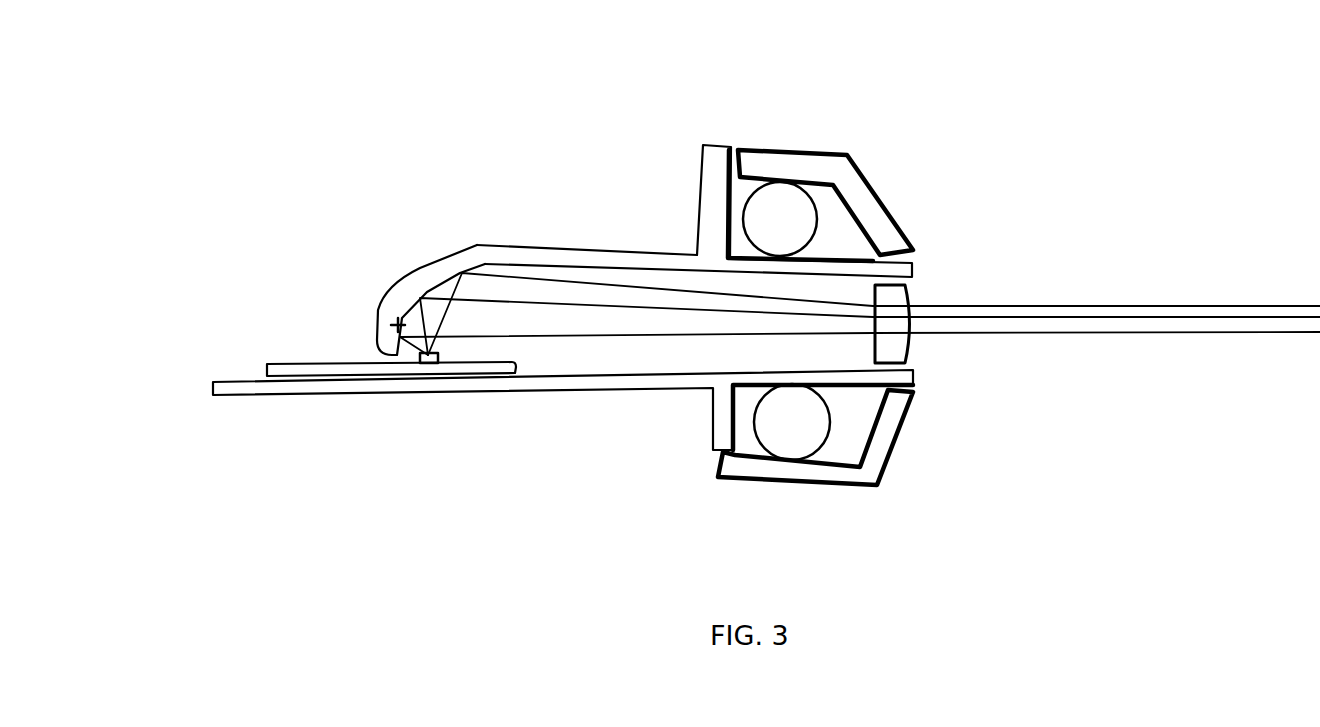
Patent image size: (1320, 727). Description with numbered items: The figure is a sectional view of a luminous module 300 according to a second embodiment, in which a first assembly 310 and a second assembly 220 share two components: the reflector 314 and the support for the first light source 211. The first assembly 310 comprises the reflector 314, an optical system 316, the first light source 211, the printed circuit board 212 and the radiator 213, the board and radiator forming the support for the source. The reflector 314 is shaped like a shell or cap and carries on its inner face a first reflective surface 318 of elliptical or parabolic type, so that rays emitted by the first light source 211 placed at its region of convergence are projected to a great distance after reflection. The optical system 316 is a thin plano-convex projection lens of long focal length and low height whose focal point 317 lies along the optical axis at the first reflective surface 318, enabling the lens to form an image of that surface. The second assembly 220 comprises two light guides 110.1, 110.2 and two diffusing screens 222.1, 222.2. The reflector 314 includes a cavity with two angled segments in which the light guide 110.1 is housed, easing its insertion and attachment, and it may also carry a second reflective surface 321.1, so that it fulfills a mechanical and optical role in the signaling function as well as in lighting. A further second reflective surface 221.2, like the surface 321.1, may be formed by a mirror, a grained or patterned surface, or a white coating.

The luminous module 300 is at (331, 476).
The first assembly 310 is at (202, 237).
The reflector 314 is at (498, 255).
The optical system 316 is at (912, 352).
The focal point 317 is at (400, 322).
The first reflective surface 318 is at (580, 268).
The second reflective surface 321.1 is at (739, 150).
The second assembly 220 is at (933, 503).
The diffusing screen 222.1 is at (866, 198).
The diffusing screen 222.2 is at (875, 485).
The second reflective surface 221.2 is at (738, 445).
The light guide 110.1 is at (808, 185).
The light guide 110.2 is at (812, 450).
The first light source 211 is at (438, 357).
The printed circuit board 212 is at (283, 363).
The radiator 213 is at (543, 393).